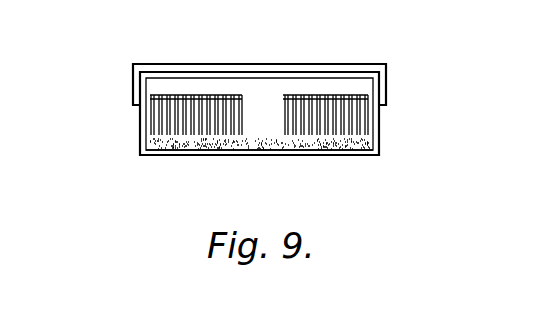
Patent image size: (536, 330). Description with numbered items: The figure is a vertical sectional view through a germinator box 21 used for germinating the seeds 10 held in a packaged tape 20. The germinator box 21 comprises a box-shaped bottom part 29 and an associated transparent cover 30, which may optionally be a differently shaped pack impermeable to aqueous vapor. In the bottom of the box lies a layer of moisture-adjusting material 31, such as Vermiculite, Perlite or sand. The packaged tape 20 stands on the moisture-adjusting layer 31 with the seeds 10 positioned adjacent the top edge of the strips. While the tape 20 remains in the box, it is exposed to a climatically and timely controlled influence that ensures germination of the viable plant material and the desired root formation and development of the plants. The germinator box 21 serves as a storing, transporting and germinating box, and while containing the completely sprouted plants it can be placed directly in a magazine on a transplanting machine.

The seeds 10 is at (246, 98).
The packaged tape 20 is at (351, 96).
The germinator box 21 is at (139, 136).
The box-shaped bottom part 29 is at (197, 156).
The transparent cover 30 is at (148, 68).
The moisture-adjusting material 31 is at (346, 143).